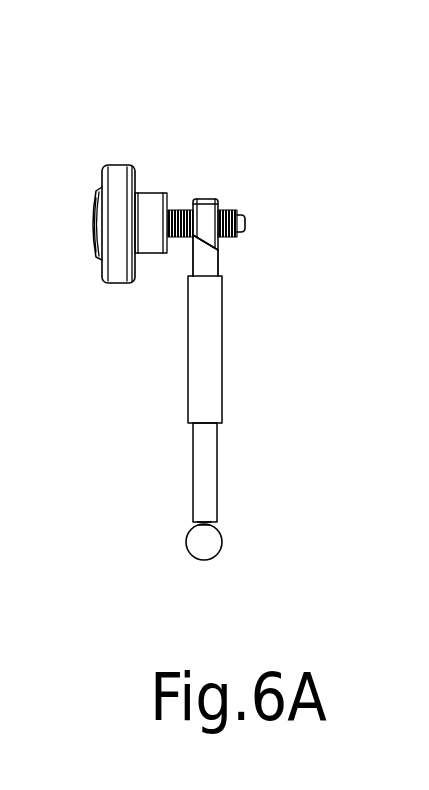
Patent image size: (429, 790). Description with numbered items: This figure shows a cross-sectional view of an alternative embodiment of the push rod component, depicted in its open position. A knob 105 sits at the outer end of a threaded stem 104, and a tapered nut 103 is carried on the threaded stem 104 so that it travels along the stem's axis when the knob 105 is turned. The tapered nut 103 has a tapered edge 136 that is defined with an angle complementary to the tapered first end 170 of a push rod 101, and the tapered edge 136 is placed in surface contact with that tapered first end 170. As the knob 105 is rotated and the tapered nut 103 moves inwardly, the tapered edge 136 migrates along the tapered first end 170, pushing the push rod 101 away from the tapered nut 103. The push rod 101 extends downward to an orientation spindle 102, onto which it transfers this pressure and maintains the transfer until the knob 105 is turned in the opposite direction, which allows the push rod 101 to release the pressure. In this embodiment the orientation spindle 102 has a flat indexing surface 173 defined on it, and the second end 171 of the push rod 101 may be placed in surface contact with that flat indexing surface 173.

The push rod 101 is at (210, 360).
The orientation spindle 102 is at (217, 540).
The tapered nut 103 is at (205, 198).
The threaded stem 104 is at (168, 212).
The knob 105 is at (123, 173).
The tapered edge 136 is at (198, 266).
The tapered first end 170 is at (207, 265).
The second end 171 is at (210, 480).
The flat indexing surface 173 is at (210, 520).